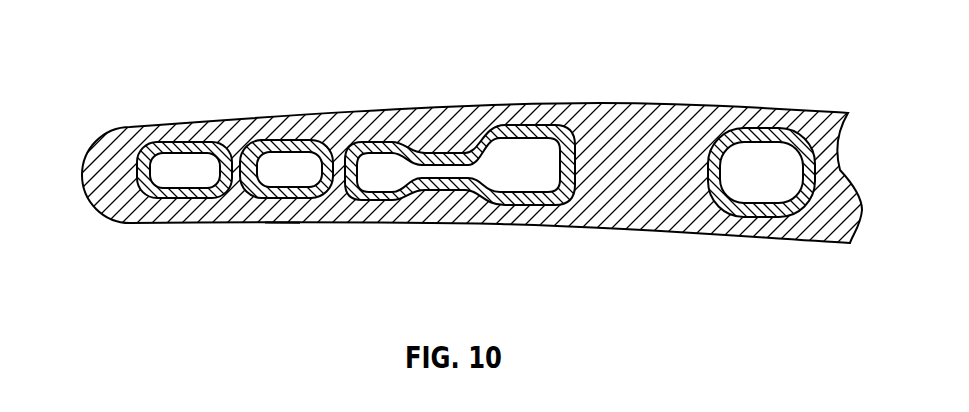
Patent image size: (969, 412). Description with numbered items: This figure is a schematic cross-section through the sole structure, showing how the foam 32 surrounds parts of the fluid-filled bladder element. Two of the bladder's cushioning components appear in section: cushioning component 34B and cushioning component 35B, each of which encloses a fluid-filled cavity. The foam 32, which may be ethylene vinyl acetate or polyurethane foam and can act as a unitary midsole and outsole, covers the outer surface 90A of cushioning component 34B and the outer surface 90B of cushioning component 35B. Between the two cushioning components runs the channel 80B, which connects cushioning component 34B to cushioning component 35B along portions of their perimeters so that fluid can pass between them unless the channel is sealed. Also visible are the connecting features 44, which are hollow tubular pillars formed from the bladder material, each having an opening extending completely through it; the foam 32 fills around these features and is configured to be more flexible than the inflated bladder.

The foam 32 is at (698, 128).
The cushioning component 35B is at (176, 143).
The outer surface 90A is at (145, 142).
The outer surface 90B is at (568, 131).
The channel 80B is at (447, 148).
The cushioning component 34B is at (530, 206).
The connecting features 44 is at (283, 213).